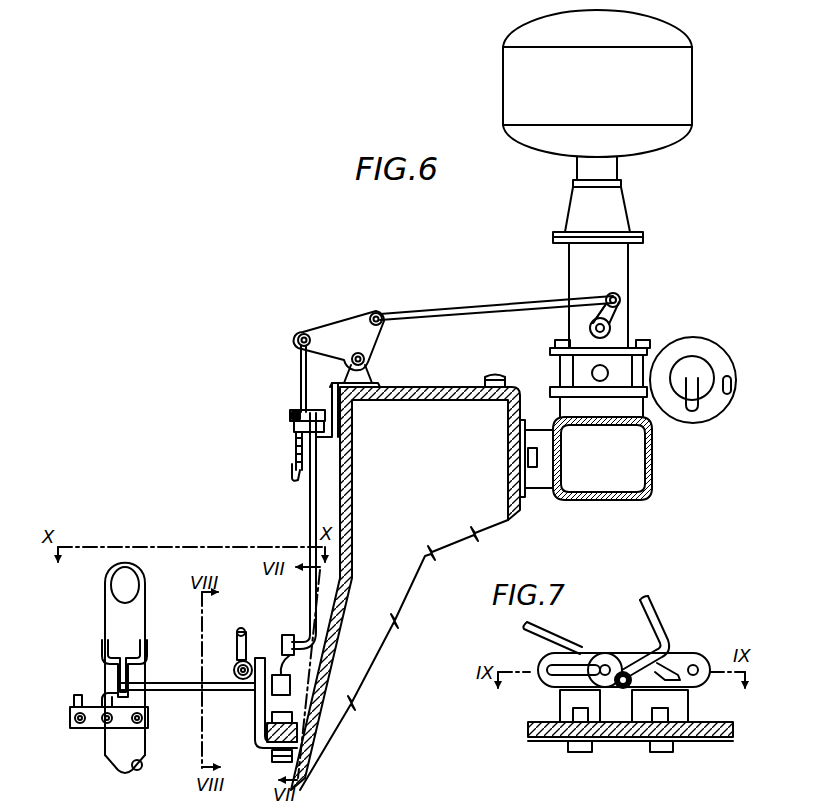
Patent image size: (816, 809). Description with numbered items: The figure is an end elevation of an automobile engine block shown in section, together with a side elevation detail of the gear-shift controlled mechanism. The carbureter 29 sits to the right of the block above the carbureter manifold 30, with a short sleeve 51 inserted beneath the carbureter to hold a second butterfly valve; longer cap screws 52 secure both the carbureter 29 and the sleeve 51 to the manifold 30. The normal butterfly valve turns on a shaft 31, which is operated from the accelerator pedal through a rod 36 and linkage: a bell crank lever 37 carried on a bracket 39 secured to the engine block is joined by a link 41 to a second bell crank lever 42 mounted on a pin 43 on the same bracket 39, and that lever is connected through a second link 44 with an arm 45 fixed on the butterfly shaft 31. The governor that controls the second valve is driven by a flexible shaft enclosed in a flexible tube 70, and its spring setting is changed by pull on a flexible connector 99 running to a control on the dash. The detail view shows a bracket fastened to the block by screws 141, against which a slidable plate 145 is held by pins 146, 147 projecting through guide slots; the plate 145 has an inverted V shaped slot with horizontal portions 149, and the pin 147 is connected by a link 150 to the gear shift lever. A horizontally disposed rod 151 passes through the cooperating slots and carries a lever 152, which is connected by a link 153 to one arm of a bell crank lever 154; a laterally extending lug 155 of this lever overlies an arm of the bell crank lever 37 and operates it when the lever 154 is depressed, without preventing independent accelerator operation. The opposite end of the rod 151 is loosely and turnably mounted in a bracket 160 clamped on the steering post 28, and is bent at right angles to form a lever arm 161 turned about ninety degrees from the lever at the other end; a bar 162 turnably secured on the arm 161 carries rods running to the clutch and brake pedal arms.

In FIG. 6, the steering post 28 is at (117, 613).
In FIG. 6, the carbureter 29 is at (616, 288).
In FIG. 6, the carbureter manifold 30 is at (618, 500).
In FIG. 6, the butterfly valve shaft 31 is at (607, 324).
In FIG. 6, the accelerator rod 36 is at (292, 475).
In FIG. 6, the bell crank lever 37 is at (296, 453).
In FIG. 6, the bracket 39 is at (380, 383).
In FIG. 6, the link 41 is at (300, 371).
In FIG. 6, the second bell crank lever 42 is at (336, 346).
In FIG. 6, the pin 43 is at (372, 362).
In FIG. 6, the second link 44 is at (482, 312).
In FIG. 6, the arm 45 is at (590, 322).
In FIG. 6, the sleeve 51 is at (576, 375).
In FIG. 6, the cap screws 52 is at (647, 347).
In FIG. 6, the flexible tube 70 is at (688, 412).
In FIG. 6, the flexible connector 99 is at (731, 392).
In FIG. 7, the screws 141 is at (575, 744).
In FIG. 7, the slidable plate 145 is at (607, 657).
In FIG. 7, the pin 146 is at (568, 686).
In FIG. 6, the pin 147 is at (236, 668).
In FIG. 7, the horizontal portions 149 is at (690, 688).
In FIG. 6, the link 150 is at (250, 636).
In FIG. 7, the link 150 is at (532, 633).
In FIG. 6, the horizontally disposed rod 151 is at (216, 690).
In FIG. 7, the horizontally disposed rod 151 is at (620, 688).
In FIG. 7, the lever 152 is at (650, 655).
In FIG. 6, the link 153 is at (310, 508).
In FIG. 7, the link 153 is at (653, 607).
In FIG. 6, the bell crank lever 154 is at (296, 428).
In FIG. 6, the lug 155 is at (290, 414).
In FIG. 6, the bracket 160 is at (110, 682).
In FIG. 6, the lever arm 161 is at (104, 696).
In FIG. 6, the bar 162 is at (96, 728).